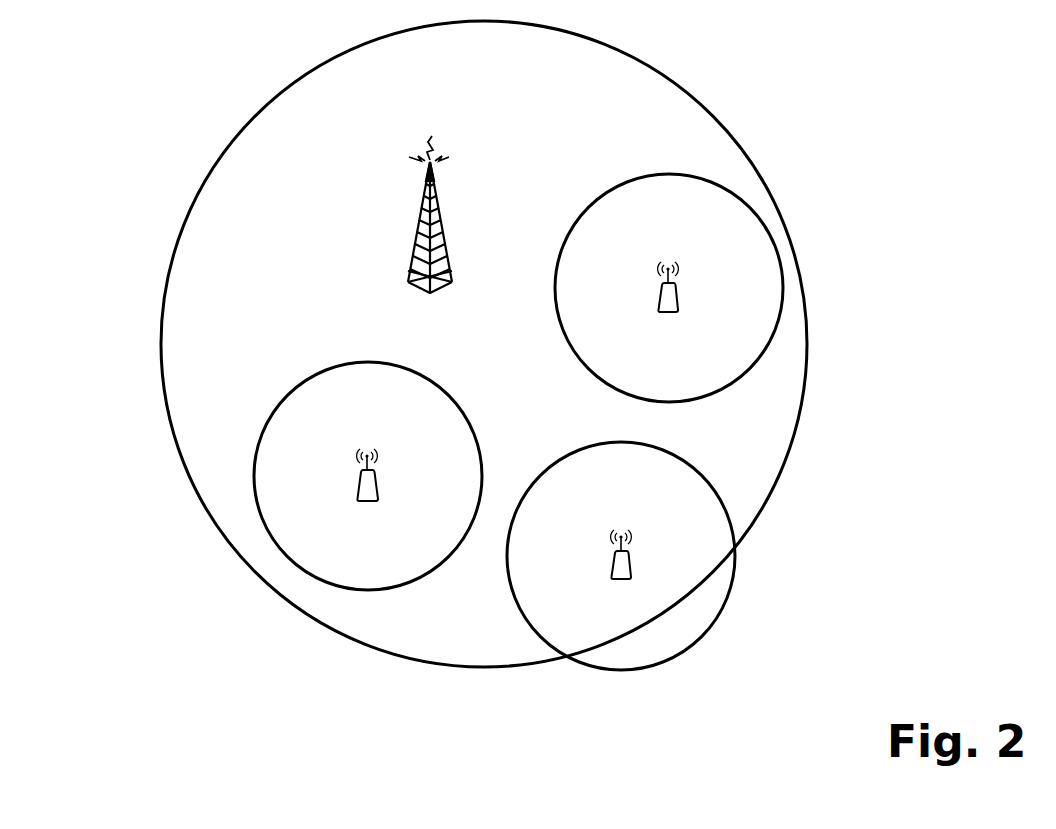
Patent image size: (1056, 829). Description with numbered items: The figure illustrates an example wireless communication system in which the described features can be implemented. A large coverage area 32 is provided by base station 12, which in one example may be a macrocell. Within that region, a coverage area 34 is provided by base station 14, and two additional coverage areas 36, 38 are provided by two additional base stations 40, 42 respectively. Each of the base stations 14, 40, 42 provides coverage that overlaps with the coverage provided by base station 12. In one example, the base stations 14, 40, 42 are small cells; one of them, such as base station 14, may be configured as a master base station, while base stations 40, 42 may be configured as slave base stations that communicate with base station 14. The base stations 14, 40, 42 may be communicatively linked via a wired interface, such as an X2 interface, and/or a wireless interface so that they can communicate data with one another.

The base station 12 is at (442, 223).
The base station 14 is at (377, 480).
The coverage area 32 is at (232, 272).
The coverage area 34 is at (355, 580).
The coverage area 36 is at (658, 392).
The coverage area 38 is at (611, 660).
The base station 40 is at (678, 291).
The base station 42 is at (632, 560).